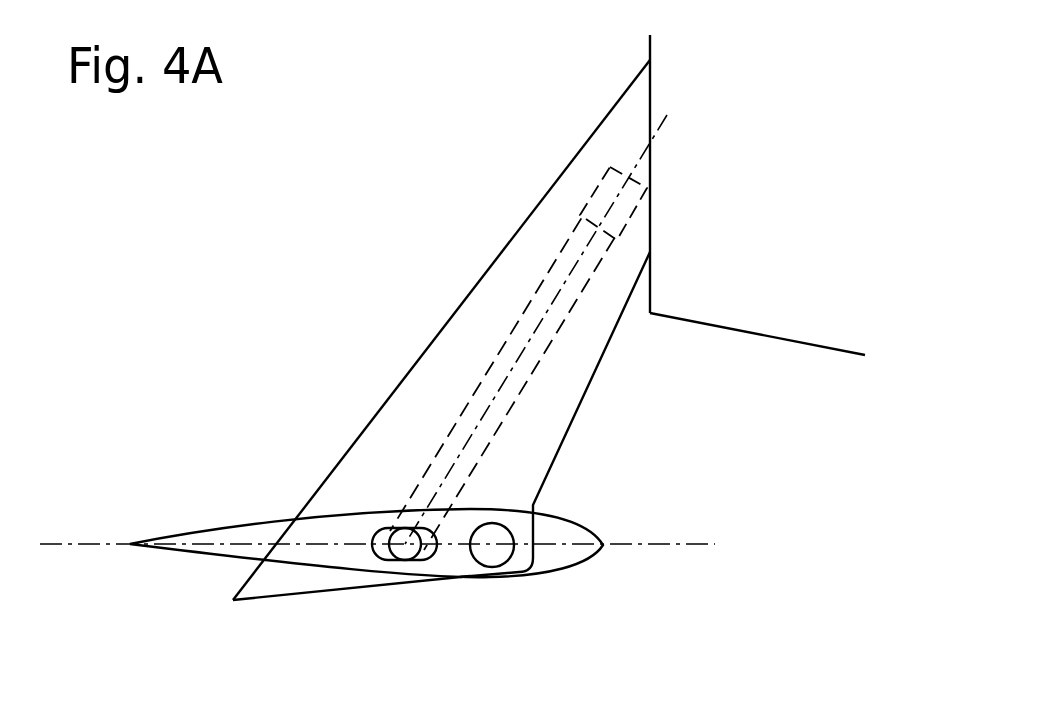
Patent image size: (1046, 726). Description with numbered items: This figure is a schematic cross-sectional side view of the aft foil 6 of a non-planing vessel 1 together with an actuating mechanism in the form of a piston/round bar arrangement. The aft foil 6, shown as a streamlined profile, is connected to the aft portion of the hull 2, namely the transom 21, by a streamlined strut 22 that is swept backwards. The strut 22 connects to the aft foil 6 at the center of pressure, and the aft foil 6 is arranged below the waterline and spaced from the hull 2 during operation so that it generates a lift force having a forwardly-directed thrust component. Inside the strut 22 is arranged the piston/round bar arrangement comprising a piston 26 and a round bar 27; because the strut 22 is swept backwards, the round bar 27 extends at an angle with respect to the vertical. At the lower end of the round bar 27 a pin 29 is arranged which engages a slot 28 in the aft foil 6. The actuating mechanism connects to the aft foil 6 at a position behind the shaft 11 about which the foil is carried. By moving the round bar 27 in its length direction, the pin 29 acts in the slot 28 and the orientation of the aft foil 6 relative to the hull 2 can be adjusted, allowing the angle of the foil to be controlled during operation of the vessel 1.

The vessel 1 is at (640, 44).
The hull 2 is at (695, 323).
The aft foil 6 is at (157, 548).
The shaft 11 is at (504, 556).
The transom 21 is at (649, 115).
The strut 22 is at (572, 397).
The piston 26 is at (605, 194).
The round bar 27 is at (528, 327).
The slot 28 is at (368, 528).
The pin 29 is at (405, 558).